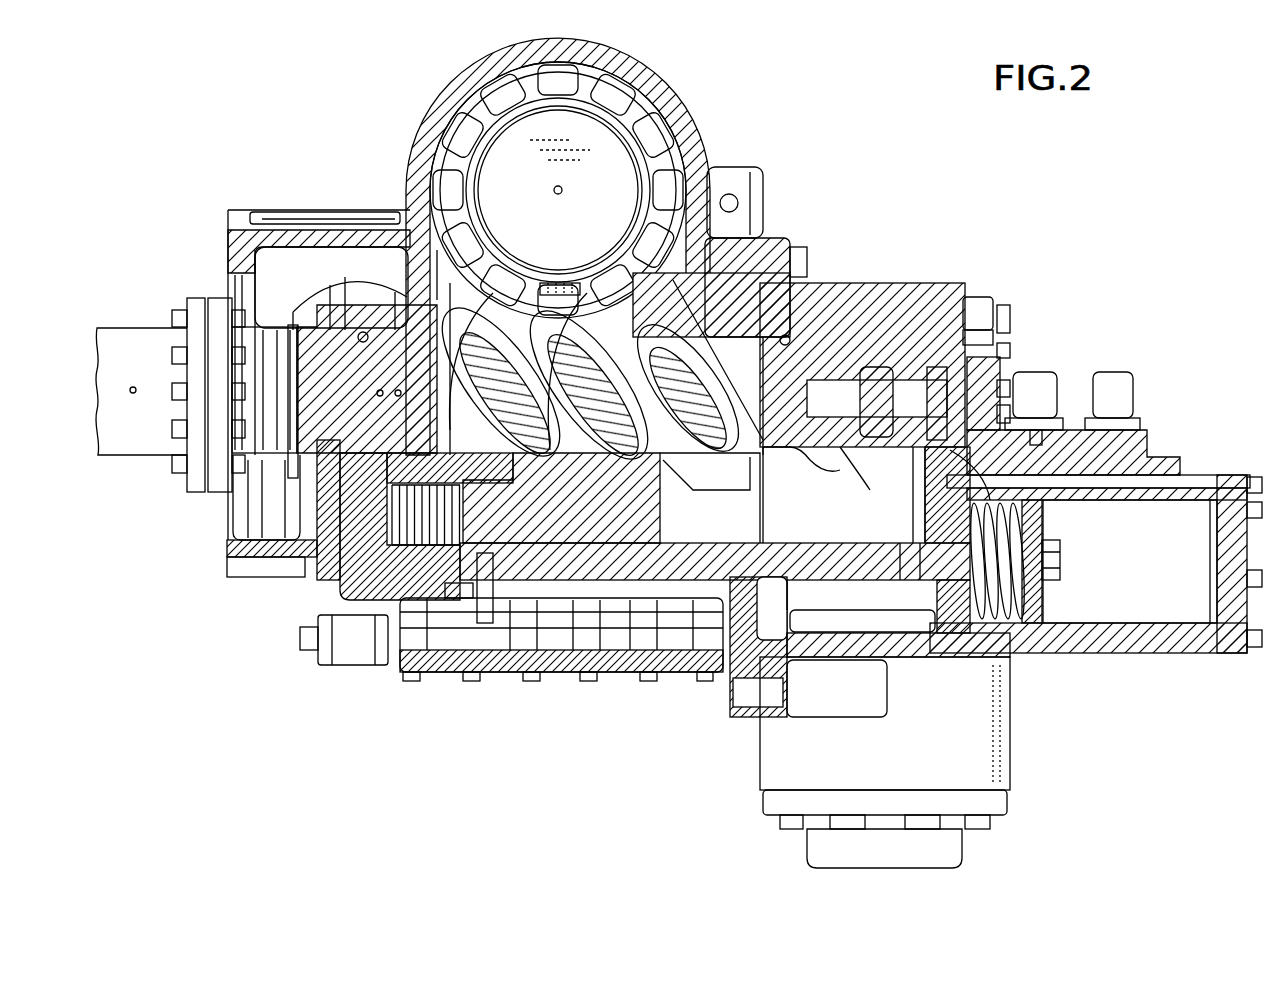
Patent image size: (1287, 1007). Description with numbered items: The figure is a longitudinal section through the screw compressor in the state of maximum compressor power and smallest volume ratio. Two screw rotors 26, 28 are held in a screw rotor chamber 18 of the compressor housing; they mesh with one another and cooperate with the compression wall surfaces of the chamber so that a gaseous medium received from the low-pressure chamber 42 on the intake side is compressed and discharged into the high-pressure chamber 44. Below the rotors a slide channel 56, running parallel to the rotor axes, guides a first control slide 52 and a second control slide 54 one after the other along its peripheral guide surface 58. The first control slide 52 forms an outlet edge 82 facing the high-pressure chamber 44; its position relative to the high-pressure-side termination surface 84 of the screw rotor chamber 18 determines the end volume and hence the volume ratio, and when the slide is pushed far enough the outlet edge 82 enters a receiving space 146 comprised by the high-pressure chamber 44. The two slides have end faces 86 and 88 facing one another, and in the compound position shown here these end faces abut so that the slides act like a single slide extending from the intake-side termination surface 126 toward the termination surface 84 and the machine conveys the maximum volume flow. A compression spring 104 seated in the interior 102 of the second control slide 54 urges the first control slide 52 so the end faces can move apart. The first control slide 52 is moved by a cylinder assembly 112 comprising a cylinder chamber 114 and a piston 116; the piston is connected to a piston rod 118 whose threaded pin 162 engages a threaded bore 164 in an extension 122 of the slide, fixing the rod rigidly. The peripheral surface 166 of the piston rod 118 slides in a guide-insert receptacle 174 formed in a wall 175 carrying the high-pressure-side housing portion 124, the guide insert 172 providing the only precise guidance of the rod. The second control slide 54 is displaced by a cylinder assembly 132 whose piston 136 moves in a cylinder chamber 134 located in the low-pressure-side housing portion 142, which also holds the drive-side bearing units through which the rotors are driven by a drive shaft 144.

The screw rotor chamber 18 is at (660, 175).
The screw rotor 28 is at (723, 300).
The screw rotor 26 is at (750, 320).
The high-pressure-side termination surface 84 is at (786, 314).
The receiving space 146 is at (795, 475).
The high-pressure chamber 44 is at (840, 490).
The guide-insert receptacle 174 is at (920, 545).
The wall 175 is at (950, 525).
The high-pressure-side housing portion 124 is at (1073, 460).
The cylinder assembly 112 is at (1125, 532).
The cylinder chamber 114 is at (1172, 537).
The piston 116 is at (1030, 620).
The guide insert 172 is at (963, 625).
The peripheral guide surface 58 is at (585, 550).
The slide channel 56 is at (677, 548).
The first control slide 52 is at (593, 612).
The end face 86 is at (495, 322).
The end face 88 is at (525, 345).
The outlet edge 82 is at (585, 320).
The interior 102 is at (450, 596).
The threaded pin 162 is at (693, 600).
The extension 122 is at (740, 600).
The piston rod 118 is at (893, 580).
The peripheral surface 166 is at (848, 580).
The threaded bore 164 is at (763, 583).
The drive shaft 144 is at (133, 432).
The cylinder chamber 134 is at (347, 500).
The intake-side termination surface 126 is at (437, 340).
The low-pressure-side housing portion 142 is at (352, 372).
The low-pressure chamber 42 is at (432, 258).
The piston 136 is at (315, 578).
The second control slide 54 is at (380, 570).
The cylinder assembly 132 is at (318, 658).
The compression spring 104 is at (425, 573).